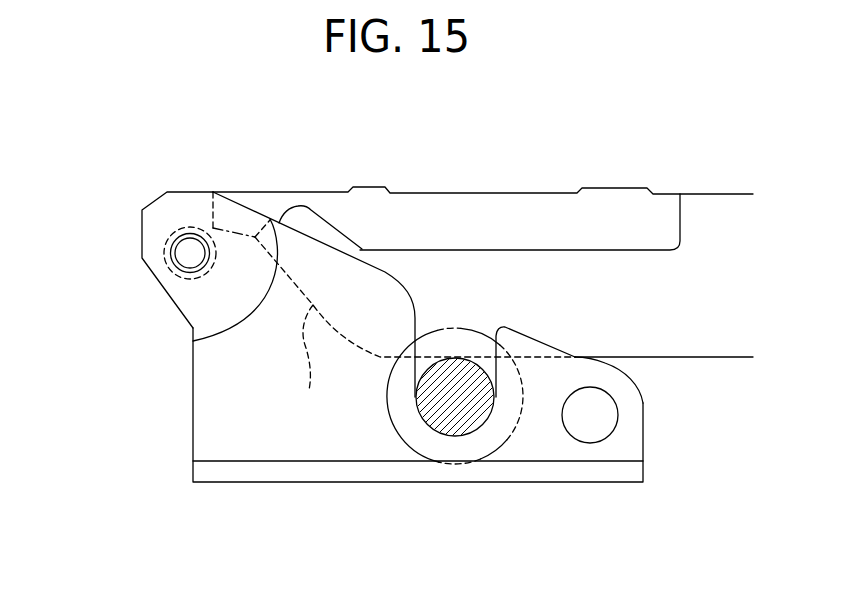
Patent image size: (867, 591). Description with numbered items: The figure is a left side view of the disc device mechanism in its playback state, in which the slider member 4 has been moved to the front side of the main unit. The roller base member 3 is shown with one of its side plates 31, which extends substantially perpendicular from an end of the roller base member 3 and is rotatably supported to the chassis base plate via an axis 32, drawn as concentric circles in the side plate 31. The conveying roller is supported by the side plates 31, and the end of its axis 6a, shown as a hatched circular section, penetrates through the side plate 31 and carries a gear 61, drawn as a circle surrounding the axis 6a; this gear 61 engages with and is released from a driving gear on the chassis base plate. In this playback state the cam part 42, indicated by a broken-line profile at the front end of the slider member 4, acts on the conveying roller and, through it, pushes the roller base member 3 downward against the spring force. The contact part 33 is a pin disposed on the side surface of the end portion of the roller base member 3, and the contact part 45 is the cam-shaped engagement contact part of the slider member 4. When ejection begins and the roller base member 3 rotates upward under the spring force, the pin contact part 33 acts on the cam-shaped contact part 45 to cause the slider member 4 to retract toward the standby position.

The roller base member 3 is at (268, 470).
The slider member 4 is at (529, 208).
The side plate 31 is at (190, 205).
The axis 32 is at (186, 255).
The contact part 33 is at (605, 410).
The cam part 42 is at (394, 305).
The contact part 45 is at (303, 207).
The gear 61 is at (392, 418).
The axis 6a is at (468, 410).